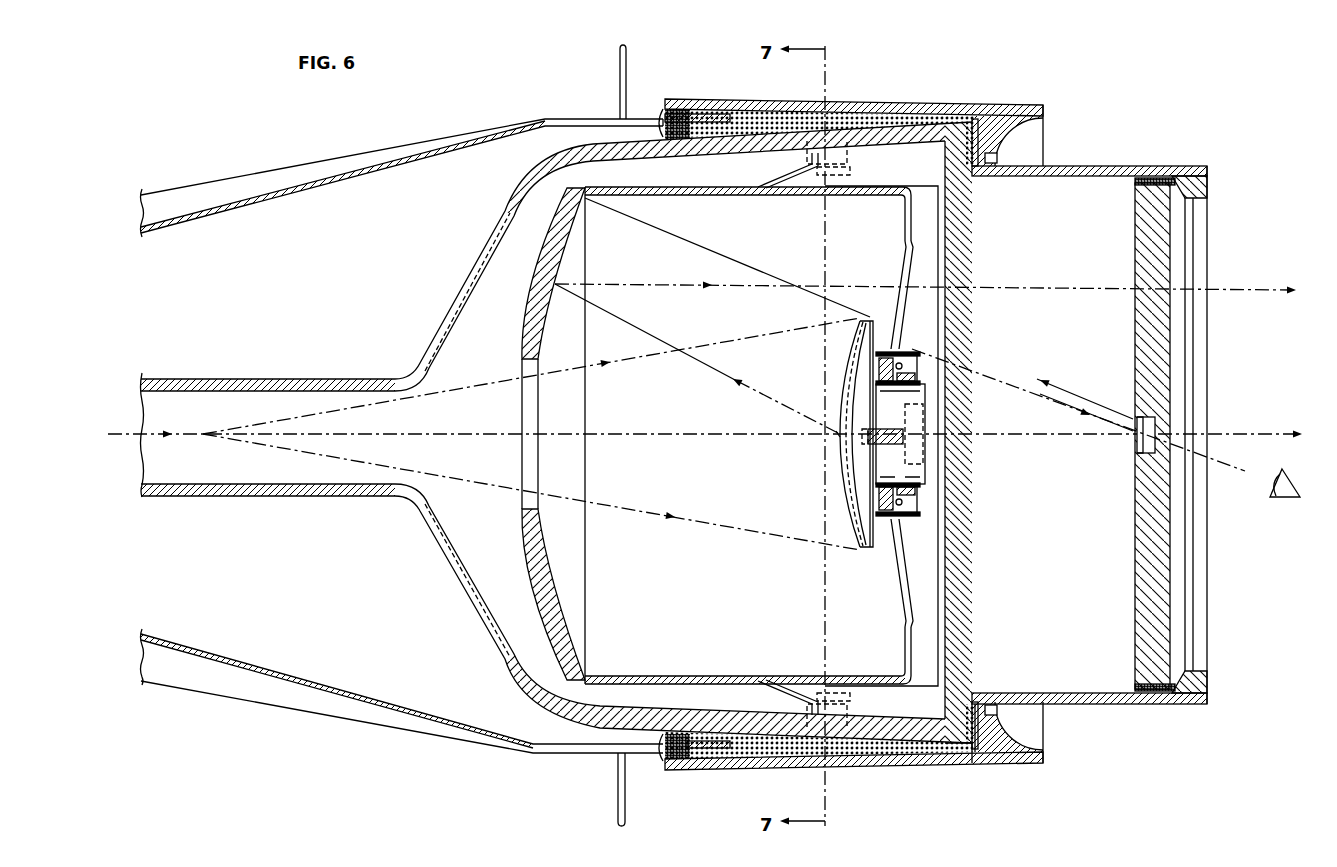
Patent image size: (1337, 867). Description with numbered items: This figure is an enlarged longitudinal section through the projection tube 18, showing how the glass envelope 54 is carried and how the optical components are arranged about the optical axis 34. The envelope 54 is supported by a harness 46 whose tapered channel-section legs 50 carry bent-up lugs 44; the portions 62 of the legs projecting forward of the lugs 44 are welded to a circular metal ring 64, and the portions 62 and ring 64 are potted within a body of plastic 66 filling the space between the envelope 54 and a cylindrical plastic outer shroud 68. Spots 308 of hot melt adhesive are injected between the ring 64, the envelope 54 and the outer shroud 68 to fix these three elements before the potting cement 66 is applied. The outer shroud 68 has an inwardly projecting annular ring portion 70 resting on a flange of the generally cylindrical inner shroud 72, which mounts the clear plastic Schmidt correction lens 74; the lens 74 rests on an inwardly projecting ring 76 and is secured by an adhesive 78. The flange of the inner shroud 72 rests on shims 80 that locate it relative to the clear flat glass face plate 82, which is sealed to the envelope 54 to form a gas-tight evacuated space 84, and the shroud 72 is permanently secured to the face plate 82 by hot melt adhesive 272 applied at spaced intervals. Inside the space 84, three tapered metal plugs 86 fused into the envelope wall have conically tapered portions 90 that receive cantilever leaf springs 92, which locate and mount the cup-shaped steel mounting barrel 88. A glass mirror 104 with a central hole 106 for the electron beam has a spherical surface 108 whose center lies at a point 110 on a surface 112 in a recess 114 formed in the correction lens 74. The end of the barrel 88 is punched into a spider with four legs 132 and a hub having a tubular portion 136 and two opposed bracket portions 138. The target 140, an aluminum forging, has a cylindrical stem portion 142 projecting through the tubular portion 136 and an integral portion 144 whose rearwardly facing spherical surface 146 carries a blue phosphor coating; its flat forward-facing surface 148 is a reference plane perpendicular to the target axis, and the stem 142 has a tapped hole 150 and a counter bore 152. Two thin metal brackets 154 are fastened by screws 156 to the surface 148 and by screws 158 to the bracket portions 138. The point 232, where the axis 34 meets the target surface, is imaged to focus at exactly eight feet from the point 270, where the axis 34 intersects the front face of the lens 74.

The optical head assembly 18 is at (428, 768).
The optical axis 34 is at (1260, 432).
The lugs 44 is at (619, 58).
The harness 46 is at (287, 155).
The tapered channel-section legs 50 is at (226, 212).
The glass envelope 54 is at (468, 270).
The portions of the legs 62 is at (636, 118).
The circular metal ring 64 is at (752, 100).
The body of plastic 66 is at (855, 108).
The cylindrical plastic outer shroud 68 is at (925, 104).
The inwardly projecting annular ring portion 70 is at (1006, 137).
The inner shroud 72 is at (1075, 165).
The Schmidt correction lens 74 is at (1157, 255).
The inwardly projecting ring 76 is at (1198, 188).
The adhesive 78 is at (1180, 178).
The shims 80 is at (976, 175).
The face plate 82 is at (973, 222).
The evacuated space 84 is at (503, 333).
The tapered cylindrical metal plugs 86 is at (847, 157).
The mounting barrel 88 is at (716, 186).
The conically tapered portions 90 is at (850, 172).
The cantilever leaf springs 92 is at (773, 178).
The glass mirror 104 is at (521, 549).
The central hole 106 is at (523, 359).
The spherical surface 108 is at (544, 550).
The point 110 is at (1152, 432).
The surface 112 is at (1147, 440).
The recess 114 is at (1133, 415).
The legs 132 is at (901, 268).
The tubular portion 136 is at (920, 379).
The bracket portions 138 is at (914, 363).
The target 140 is at (836, 361).
The cylindrical stem portion 142 is at (902, 413).
The integral portion 144 is at (849, 487).
The spherical surface 146 is at (842, 469).
The flat forward-facing surface 148 is at (882, 476).
The tapped hole 150 is at (903, 438).
The counter bore 152 is at (923, 415).
The thin metal brackets 154 is at (916, 352).
The screws 156 is at (874, 388).
The screws 158 is at (900, 318).
The point 232 is at (838, 433).
The point 270 is at (1172, 436).
The hot melt adhesive 272 is at (983, 760).
The spots of hot melt adhesive 308 is at (662, 112).